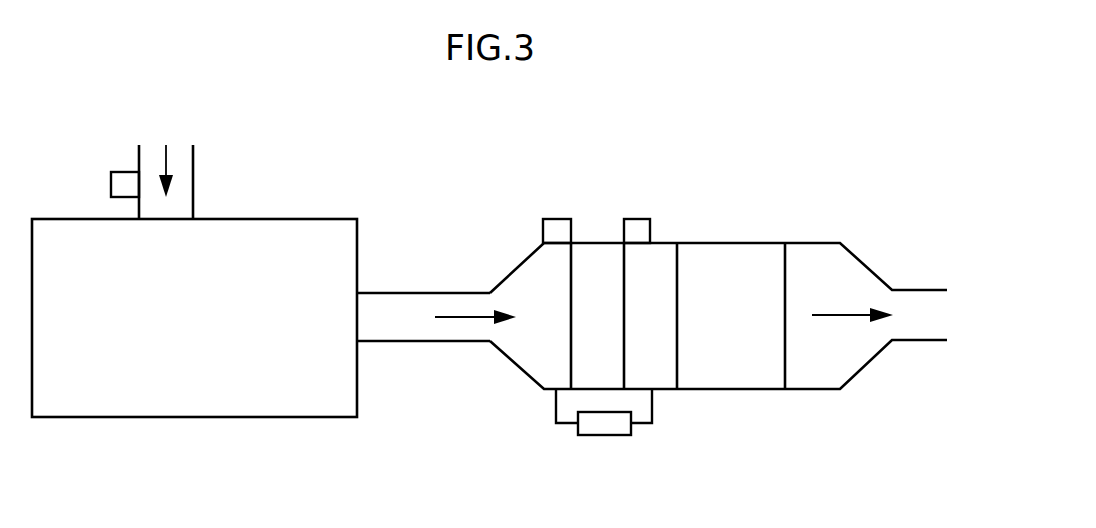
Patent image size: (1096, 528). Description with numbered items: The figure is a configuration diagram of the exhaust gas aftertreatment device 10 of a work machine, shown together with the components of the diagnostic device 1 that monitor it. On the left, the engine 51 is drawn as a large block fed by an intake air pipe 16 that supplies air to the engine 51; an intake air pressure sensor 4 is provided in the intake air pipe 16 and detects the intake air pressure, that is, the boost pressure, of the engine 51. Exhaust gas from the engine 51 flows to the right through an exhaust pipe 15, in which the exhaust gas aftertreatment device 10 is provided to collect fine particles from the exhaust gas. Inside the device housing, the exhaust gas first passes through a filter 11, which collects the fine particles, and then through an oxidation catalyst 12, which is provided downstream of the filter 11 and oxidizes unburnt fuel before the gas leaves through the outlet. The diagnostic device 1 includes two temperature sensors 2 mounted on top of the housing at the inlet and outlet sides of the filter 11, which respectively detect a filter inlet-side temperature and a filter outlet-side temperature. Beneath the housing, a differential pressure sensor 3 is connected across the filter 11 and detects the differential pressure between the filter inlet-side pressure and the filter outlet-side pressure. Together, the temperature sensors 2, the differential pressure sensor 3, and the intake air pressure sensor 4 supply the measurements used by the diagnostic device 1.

The diagnostic device 1 is at (702, 292).
The temperature sensors 2 is at (555, 219).
The differential pressure sensor 3 is at (607, 436).
The intake air pressure sensor 4 is at (111, 182).
The exhaust gas aftertreatment device 10 is at (702, 241).
The filter 11 is at (583, 330).
The oxidation catalyst 12 is at (717, 329).
The exhaust pipe 15 is at (435, 342).
The intake air pipe 16 is at (193, 181).
The engine 51 is at (175, 330).